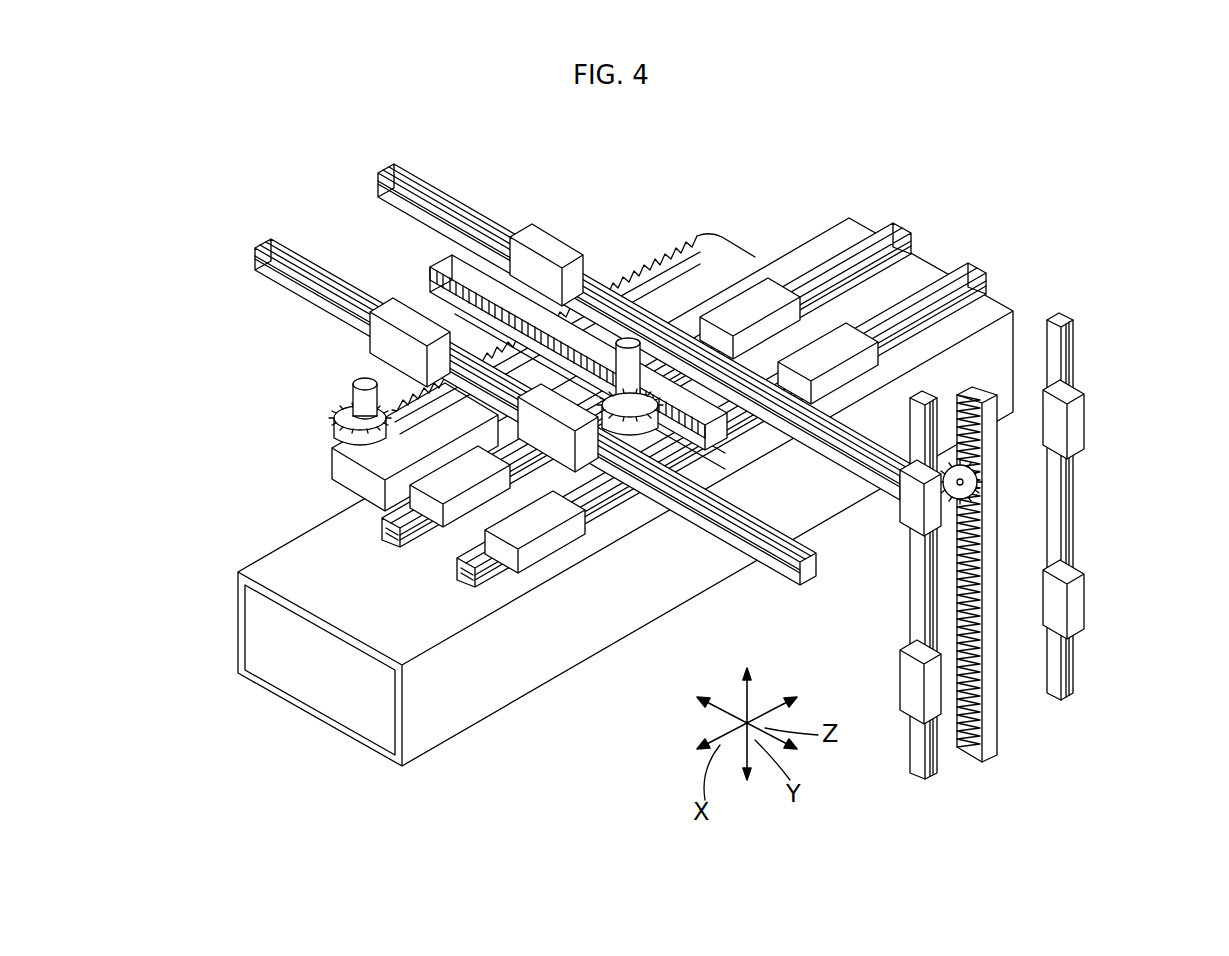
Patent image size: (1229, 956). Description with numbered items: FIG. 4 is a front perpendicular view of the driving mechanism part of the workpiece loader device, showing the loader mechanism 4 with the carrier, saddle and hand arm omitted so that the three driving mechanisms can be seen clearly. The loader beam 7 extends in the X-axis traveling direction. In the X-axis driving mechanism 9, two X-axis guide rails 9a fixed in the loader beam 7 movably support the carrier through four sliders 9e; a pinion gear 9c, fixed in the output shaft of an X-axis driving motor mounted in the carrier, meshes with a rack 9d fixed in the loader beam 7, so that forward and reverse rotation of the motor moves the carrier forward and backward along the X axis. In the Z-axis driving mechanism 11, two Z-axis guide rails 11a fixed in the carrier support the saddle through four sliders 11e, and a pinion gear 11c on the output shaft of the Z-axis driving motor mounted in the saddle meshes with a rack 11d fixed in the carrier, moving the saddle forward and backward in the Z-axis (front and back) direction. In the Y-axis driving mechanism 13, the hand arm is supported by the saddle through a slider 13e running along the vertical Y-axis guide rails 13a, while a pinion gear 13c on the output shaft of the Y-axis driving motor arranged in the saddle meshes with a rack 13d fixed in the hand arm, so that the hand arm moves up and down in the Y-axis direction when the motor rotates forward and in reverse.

The loader mechanism 4 is at (207, 399).
The loader beam 7 is at (246, 557).
The X-axis driving mechanism 9 is at (321, 501).
The X-axis guide rail 9a is at (382, 527).
The pinion gear 9c is at (345, 405).
The rack 9d is at (334, 442).
The slider 9e is at (826, 340).
The Z-axis driving mechanism 11 is at (453, 175).
The Z-axis guide rail 11a is at (583, 411).
The pinion gear 11c is at (640, 428).
The rack 11d is at (430, 260).
The slider 11e is at (560, 250).
The Y-axis driving mechanism 13 is at (1110, 357).
The vertical guide rail 13a is at (912, 760).
The pinion gear 13c is at (978, 485).
The rack 13d is at (990, 745).
The slider 13e is at (902, 500).